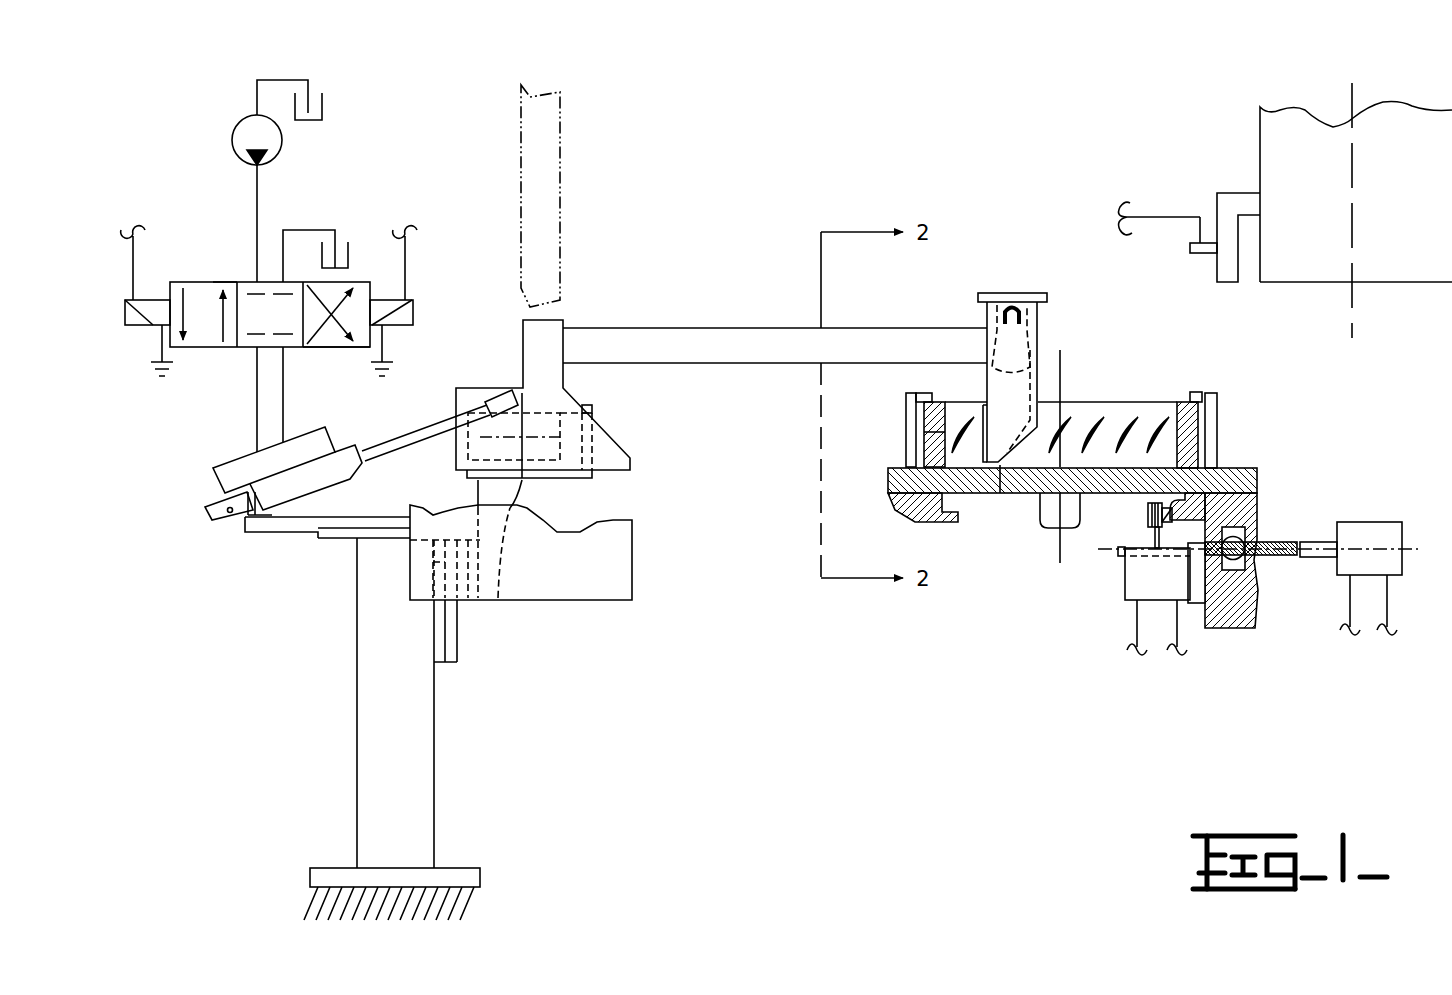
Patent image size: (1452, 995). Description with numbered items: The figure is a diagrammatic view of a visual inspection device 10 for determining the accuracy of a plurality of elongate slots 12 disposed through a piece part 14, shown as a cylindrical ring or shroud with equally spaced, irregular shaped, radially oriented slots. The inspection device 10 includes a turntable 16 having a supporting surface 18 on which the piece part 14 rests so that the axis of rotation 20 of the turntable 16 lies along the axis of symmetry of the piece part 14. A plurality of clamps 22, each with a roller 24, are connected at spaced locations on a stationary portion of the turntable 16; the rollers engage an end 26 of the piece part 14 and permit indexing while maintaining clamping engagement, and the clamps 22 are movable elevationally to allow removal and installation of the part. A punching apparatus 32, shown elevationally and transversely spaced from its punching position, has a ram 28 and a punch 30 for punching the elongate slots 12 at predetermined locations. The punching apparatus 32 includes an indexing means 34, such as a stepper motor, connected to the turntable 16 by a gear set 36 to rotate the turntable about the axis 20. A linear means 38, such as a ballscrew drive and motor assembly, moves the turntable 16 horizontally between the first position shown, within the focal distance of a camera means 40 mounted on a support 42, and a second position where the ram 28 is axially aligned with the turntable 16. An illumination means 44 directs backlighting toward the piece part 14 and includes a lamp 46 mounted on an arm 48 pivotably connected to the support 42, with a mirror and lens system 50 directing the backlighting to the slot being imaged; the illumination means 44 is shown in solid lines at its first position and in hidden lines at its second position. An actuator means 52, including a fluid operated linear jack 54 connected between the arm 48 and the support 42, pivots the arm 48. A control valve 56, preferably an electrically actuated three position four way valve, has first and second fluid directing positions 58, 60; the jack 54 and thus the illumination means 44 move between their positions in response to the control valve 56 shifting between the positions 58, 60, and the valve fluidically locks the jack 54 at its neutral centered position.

The inspection device 10 is at (862, 748).
The elongate slots 12 is at (908, 442).
The piece part 14 is at (1190, 435).
The turntable 16 is at (933, 522).
The supporting surface 18 is at (1170, 468).
The axis of rotation 20 is at (1060, 555).
The clamps 22 is at (1215, 395).
The roller 24 is at (1196, 392).
The end of the piece part 26 is at (1098, 402).
The ram 28 is at (1377, 183).
The punch 30 is at (1197, 258).
The punching apparatus 32 is at (1055, 170).
The indexing means 34 is at (1128, 600).
The gear set 36 is at (1196, 512).
The linear means 38 is at (1322, 640).
The camera means 40 is at (582, 462).
The support 42 is at (430, 752).
The illumination means 44 is at (1042, 317).
The lamp 46 is at (1037, 353).
The arm 48 is at (560, 190).
The mirror and lens system 50 is at (1000, 493).
The actuator means 52 is at (315, 657).
The linear jack 54 is at (333, 473).
The control valve 56 is at (413, 324).
The first fluid directing position 58 is at (213, 282).
The second fluid directing position 60 is at (330, 340).